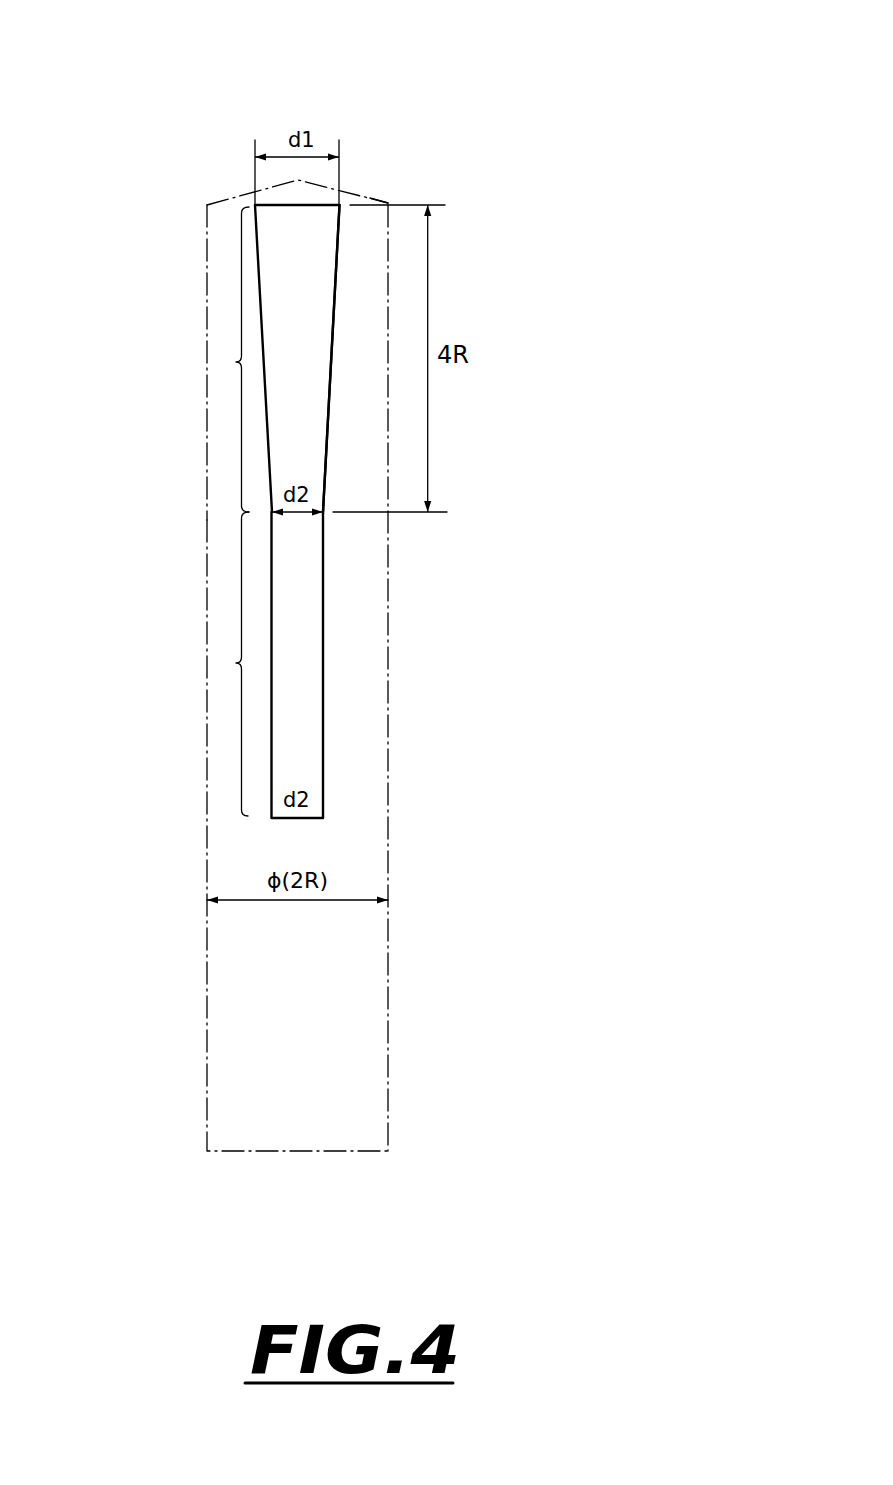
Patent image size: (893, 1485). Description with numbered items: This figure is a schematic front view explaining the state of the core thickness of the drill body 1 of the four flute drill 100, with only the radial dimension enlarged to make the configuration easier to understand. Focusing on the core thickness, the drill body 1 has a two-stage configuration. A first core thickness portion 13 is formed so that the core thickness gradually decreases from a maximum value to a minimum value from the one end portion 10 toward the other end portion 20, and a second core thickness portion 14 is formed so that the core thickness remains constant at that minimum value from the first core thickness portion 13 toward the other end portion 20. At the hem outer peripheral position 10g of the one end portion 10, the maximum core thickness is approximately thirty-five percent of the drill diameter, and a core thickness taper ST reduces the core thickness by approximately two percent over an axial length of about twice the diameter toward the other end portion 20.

The 4 flute drill 100 is at (360, 104).
The one end portion 10 is at (240, 186).
The hem outer peripheral position 10g is at (390, 202).
The first core thickness portion 13 is at (238, 362).
The second core thickness portion 14 is at (238, 663).
The core thickness taper ST is at (345, 378).
The drill body 1 is at (388, 732).
The other end portion 20 is at (298, 1176).